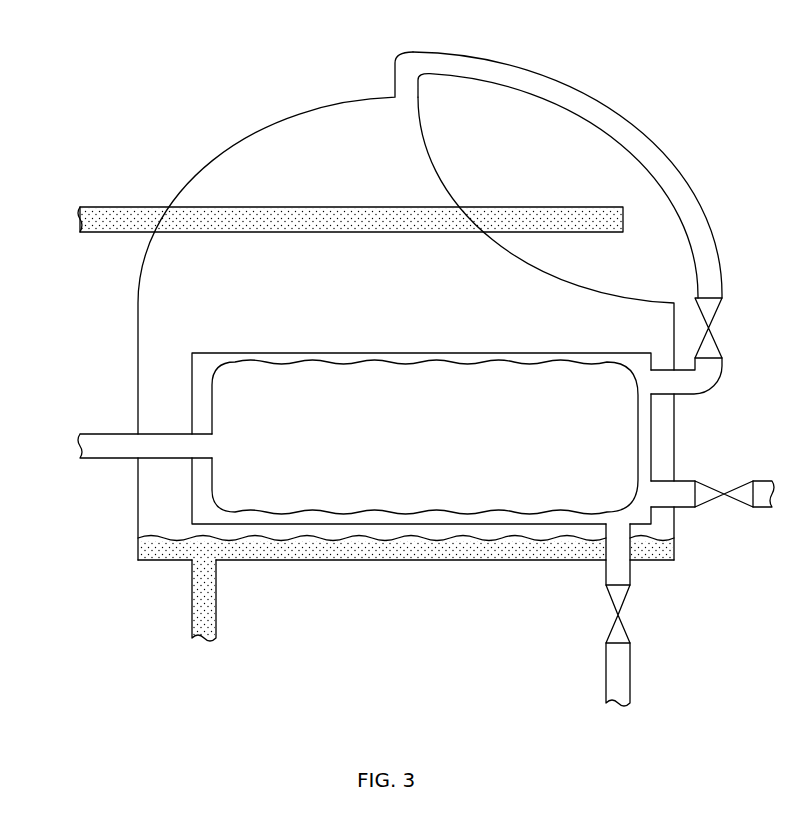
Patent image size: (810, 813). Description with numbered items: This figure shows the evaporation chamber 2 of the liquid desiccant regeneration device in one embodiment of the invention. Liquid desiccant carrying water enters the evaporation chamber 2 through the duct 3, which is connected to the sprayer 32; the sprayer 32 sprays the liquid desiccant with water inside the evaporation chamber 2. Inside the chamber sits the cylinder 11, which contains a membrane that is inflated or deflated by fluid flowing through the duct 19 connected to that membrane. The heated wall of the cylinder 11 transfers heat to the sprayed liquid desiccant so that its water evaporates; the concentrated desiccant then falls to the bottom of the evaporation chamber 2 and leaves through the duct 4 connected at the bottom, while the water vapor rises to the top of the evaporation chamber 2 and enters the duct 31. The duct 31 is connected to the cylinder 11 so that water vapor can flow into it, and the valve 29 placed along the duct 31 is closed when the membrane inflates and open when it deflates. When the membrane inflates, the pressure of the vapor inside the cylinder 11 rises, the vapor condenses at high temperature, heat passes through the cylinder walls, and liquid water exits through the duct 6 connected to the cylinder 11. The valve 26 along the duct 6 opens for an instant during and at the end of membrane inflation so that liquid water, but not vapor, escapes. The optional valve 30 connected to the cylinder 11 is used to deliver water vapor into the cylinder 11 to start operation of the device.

The evaporation chamber 2 is at (222, 98).
The duct 3 is at (125, 205).
The duct 4 is at (216, 586).
The duct 6 is at (631, 570).
The cylinder 11 is at (652, 455).
The duct 19 is at (110, 461).
The valve 26 is at (616, 615).
The valve 29 is at (712, 323).
The valve 30 is at (764, 481).
The duct 31 is at (578, 90).
The sprayer 32 is at (452, 207).